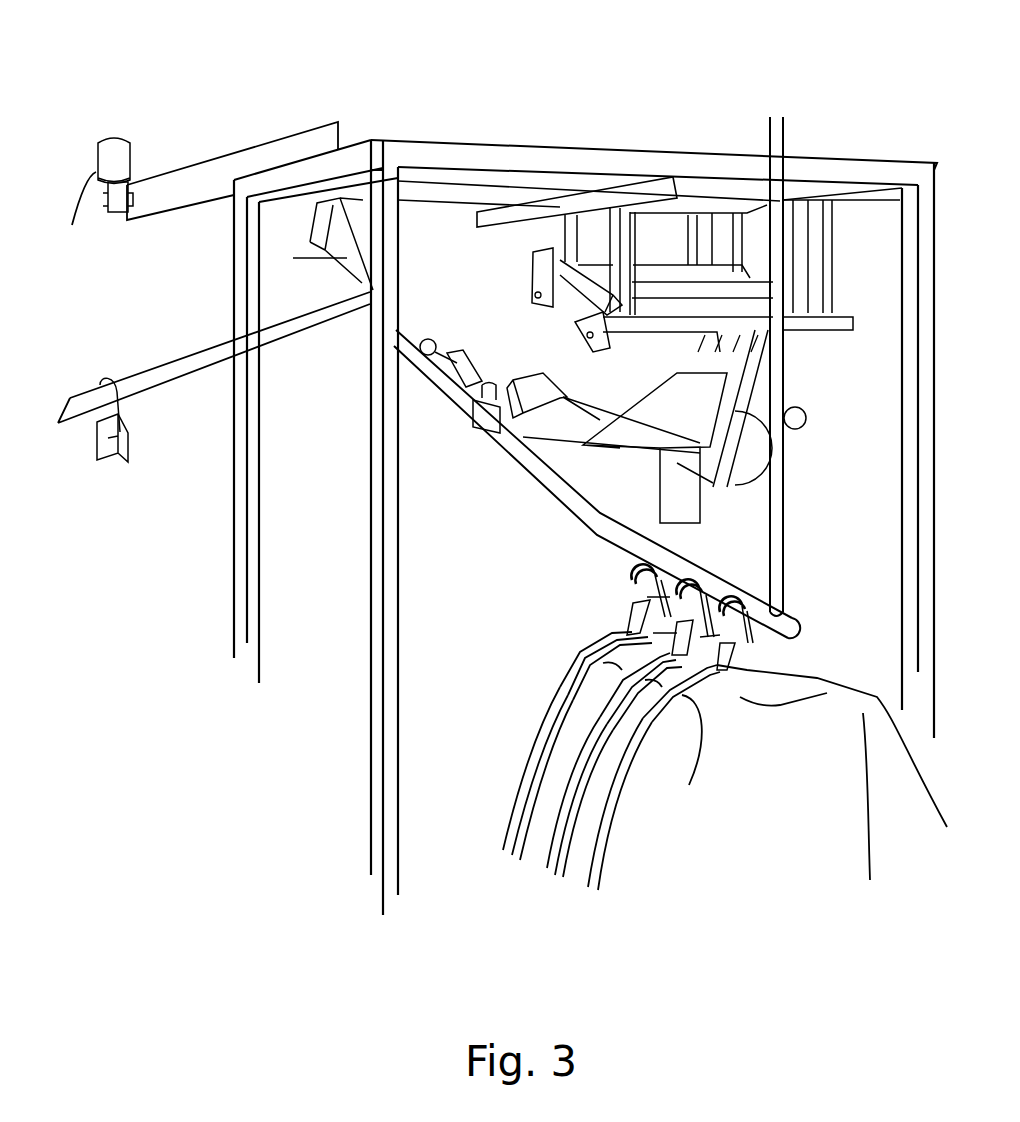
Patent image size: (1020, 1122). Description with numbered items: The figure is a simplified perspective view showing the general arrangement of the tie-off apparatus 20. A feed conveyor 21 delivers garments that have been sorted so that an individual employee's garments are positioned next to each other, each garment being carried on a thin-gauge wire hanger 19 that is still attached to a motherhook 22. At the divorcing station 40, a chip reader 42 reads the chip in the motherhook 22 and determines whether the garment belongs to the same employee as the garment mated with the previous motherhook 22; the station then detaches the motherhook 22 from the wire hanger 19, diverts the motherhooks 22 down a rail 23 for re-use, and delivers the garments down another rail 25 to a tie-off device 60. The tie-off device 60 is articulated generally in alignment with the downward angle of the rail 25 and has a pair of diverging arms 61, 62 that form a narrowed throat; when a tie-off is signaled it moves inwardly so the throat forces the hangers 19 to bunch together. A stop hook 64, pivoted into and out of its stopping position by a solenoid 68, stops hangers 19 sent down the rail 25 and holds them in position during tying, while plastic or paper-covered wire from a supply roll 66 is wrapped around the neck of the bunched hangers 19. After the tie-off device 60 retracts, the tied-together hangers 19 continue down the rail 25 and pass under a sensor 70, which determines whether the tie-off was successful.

The wire hanger 19 is at (750, 592).
The tie-off apparatus 20 is at (527, 100).
The feed conveyor 21 is at (161, 184).
The motherhook 22 is at (120, 448).
The rail 23 is at (347, 312).
The rail 25 is at (535, 465).
The divorcing station 40 is at (352, 210).
The chip reader 42 is at (302, 252).
The tie-off device 60 is at (700, 420).
The diverging arm 61 is at (543, 383).
The diverging arm 62 is at (560, 410).
The stop hook 64 is at (428, 345).
The supply roll 66 is at (735, 475).
The solenoid 68 is at (460, 360).
The sensor 70 is at (481, 430).